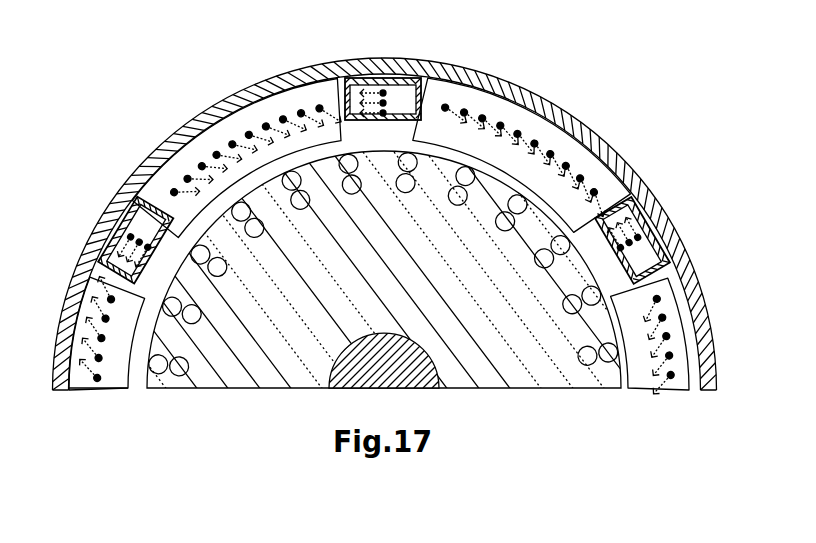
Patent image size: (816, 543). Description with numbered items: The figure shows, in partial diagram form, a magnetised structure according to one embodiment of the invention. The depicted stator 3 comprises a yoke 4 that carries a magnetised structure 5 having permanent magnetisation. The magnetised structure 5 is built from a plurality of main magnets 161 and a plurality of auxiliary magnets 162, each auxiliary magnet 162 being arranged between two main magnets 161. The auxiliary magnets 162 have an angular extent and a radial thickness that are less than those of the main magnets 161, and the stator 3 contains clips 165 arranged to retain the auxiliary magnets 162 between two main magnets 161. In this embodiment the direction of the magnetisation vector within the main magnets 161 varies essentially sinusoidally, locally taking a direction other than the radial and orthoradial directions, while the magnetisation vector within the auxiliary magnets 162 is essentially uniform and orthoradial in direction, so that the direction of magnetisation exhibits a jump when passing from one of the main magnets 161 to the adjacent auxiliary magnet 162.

The stator 3 is at (43, 300).
The yoke 4 is at (683, 250).
The magnetised structure 5 is at (117, 418).
The main magnets 161 is at (558, 140).
The auxiliary magnets 162 is at (408, 105).
The clips 165 is at (103, 213).